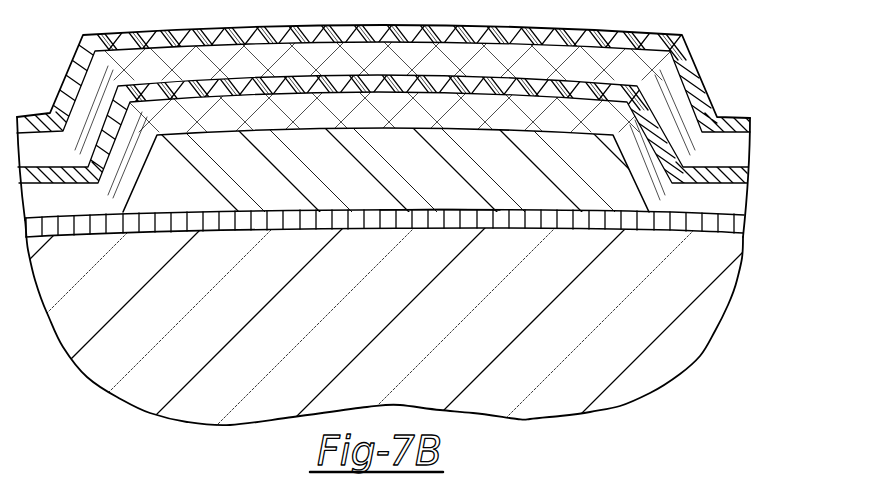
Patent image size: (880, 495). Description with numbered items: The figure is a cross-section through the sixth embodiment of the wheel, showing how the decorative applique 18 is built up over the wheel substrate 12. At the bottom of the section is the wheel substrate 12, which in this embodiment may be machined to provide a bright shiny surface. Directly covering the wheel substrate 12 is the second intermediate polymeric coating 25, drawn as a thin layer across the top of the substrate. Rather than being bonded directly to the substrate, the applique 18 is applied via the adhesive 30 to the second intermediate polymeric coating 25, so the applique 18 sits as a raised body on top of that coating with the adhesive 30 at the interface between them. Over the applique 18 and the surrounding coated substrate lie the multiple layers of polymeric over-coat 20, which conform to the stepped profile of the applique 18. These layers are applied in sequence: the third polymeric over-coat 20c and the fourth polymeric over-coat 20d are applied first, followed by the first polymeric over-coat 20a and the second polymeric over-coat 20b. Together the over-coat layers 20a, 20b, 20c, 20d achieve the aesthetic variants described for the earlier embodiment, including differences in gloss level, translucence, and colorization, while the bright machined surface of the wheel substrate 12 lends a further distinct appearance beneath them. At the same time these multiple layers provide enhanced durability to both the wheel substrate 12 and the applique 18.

The wheel substrate 12 is at (358, 337).
The decorative applique 18 is at (344, 176).
The polymeric over-coat 20 is at (432, 122).
The first polymeric over-coat 20a is at (745, 202).
The second polymeric over-coat 20b is at (740, 180).
The third polymeric over-coat 20c is at (744, 162).
The fourth polymeric over-coat 20d is at (728, 93).
The second intermediate polymeric coating 25 is at (744, 236).
The adhesive 30 is at (438, 208).